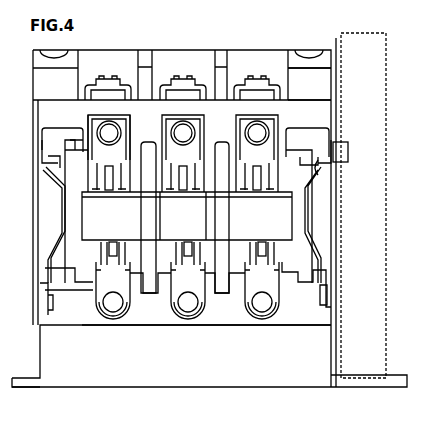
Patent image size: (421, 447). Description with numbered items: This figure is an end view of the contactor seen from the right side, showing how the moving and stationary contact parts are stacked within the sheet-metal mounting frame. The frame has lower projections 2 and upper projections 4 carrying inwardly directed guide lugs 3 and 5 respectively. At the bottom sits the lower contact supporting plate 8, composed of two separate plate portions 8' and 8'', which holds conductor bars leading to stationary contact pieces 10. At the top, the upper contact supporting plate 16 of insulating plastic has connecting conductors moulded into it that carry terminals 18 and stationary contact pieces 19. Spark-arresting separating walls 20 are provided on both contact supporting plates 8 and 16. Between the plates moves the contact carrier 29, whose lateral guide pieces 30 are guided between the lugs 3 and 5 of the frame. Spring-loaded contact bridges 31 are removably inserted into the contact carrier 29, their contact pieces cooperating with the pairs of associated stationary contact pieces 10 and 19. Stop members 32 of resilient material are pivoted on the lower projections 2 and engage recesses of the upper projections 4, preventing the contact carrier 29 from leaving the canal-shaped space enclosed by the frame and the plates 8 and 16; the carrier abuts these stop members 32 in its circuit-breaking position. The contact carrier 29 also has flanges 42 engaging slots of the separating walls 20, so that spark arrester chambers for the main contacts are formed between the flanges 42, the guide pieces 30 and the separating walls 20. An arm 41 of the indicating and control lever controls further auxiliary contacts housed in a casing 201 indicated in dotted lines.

The lower projection 2 is at (44, 295).
The guide lug 3 is at (50, 262).
The upper projection 4 is at (38, 140).
The guide lug 5 is at (44, 165).
The lower contact supporting plate 8 is at (206, 337).
The plate portion 8' is at (189, 345).
The plate portion 8'' is at (209, 362).
The stationary contact piece 10 is at (115, 318).
The upper contact supporting plate 16 is at (324, 108).
The terminal 18 is at (97, 79).
The stationary contact piece 19 is at (128, 116).
The spark-arresting separating wall 20 is at (78, 135).
The contact carrier 29 is at (191, 224).
The guide piece 30 is at (48, 212).
The contact bridge 31 is at (117, 164).
The stop member 32 is at (62, 222).
The arm 41 is at (348, 153).
The flange 42 is at (135, 219).
The casing 201 is at (386, 165).